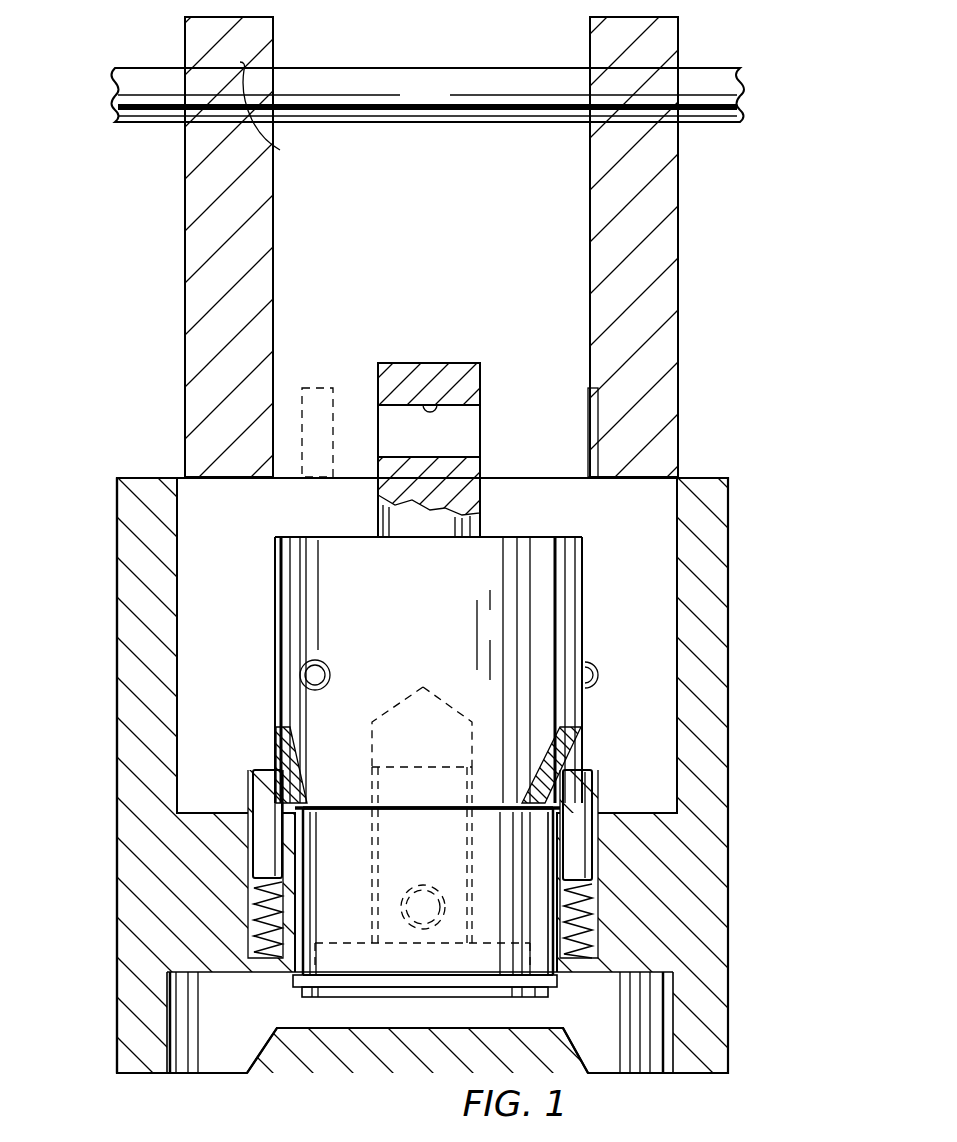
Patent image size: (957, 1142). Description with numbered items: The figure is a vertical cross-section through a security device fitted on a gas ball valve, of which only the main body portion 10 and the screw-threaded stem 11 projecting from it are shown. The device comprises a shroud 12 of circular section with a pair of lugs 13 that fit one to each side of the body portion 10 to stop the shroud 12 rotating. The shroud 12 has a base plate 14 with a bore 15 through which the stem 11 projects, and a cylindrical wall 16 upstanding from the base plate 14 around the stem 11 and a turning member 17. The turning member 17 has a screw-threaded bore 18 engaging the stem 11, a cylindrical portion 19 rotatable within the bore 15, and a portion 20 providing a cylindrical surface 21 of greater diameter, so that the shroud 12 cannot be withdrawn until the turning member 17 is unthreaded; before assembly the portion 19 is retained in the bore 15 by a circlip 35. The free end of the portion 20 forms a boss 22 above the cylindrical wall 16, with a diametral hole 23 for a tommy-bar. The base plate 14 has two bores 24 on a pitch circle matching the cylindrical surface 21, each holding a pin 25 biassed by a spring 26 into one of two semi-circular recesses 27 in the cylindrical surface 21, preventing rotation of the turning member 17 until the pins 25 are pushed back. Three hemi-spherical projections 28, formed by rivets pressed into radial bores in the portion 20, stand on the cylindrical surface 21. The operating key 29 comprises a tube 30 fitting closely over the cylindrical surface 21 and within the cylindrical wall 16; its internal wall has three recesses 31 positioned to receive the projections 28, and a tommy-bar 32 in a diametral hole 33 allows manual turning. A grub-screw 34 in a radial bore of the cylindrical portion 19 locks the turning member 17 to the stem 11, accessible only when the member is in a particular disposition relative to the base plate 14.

The main body portion 10 is at (215, 1045).
The screw-threaded stem 11 is at (405, 790).
The shroud 12 is at (117, 783).
The lugs 13 is at (128, 1045).
The base plate 14 is at (220, 835).
The bore 15 is at (297, 890).
The cylindrical wall 16 is at (130, 570).
The turning member 17 is at (555, 573).
The screw-threaded bore 18 is at (390, 737).
The cylindrical portion 19 is at (345, 833).
The portion 20 is at (340, 545).
The cylindrical surface 21 is at (272, 560).
The boss 22 is at (482, 525).
The diametral hole 23 is at (430, 405).
The bores 24 is at (250, 915).
The pin 25 is at (258, 797).
The spring 26 is at (262, 960).
The recesses 27 is at (280, 750).
The hemi-spherical projections 28 is at (300, 675).
The operating key 29 is at (431, 247).
The tube 30 is at (205, 372).
The recesses 31 is at (300, 437).
The tommy-bar 32 is at (488, 90).
The diametral hole 33 is at (280, 150).
The grub-screw 34 is at (423, 890).
The circlip 35 is at (423, 983).